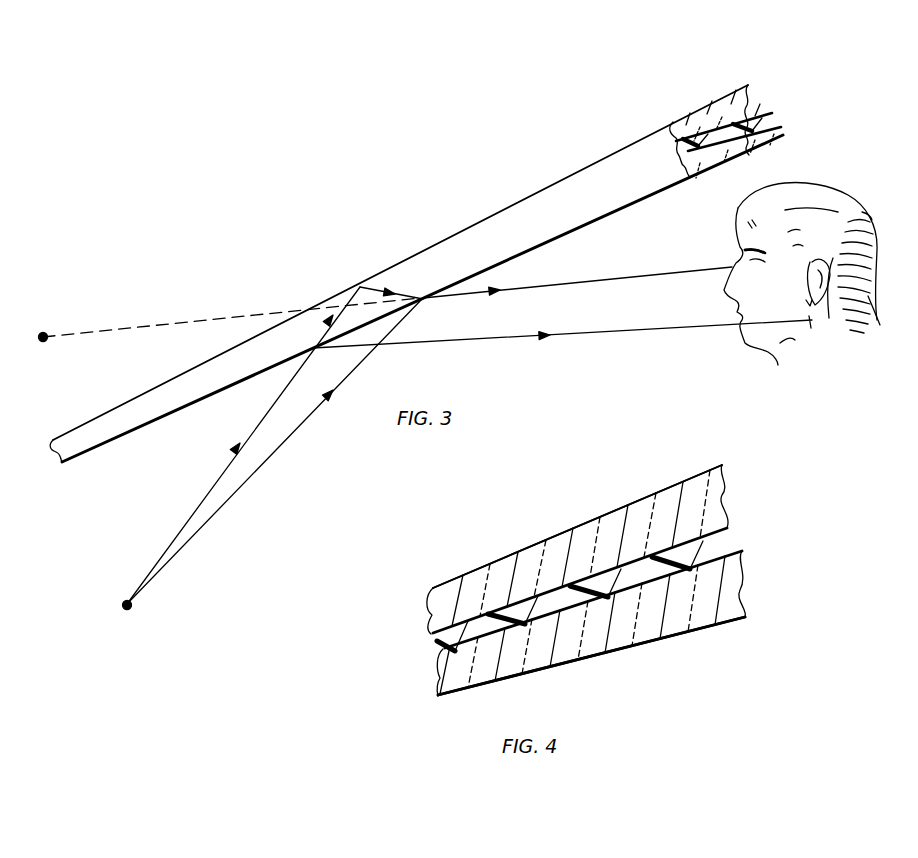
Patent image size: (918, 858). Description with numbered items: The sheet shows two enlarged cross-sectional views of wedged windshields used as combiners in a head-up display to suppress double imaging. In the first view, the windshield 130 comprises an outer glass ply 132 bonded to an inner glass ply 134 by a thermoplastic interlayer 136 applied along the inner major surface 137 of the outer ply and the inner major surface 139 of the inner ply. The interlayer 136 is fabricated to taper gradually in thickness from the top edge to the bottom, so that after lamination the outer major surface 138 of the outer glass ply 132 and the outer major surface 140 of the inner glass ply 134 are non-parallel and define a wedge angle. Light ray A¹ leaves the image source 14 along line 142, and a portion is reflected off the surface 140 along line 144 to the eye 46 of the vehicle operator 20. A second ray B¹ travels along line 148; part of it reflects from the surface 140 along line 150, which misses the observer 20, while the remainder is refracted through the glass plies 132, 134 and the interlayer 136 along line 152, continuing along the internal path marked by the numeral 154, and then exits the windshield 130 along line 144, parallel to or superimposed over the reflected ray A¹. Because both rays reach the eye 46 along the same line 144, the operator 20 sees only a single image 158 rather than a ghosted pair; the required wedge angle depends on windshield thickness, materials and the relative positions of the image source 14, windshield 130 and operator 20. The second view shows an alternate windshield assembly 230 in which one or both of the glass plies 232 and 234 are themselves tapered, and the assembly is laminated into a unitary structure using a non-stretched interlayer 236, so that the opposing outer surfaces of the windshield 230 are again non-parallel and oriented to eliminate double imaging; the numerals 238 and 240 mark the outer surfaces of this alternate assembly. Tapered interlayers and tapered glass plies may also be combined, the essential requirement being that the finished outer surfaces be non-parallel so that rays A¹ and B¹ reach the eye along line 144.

In FIG. 3, the image source 14 is at (129, 608).
In FIG. 3, the vehicle operator 20 is at (789, 274).
In FIG. 3, the eye 46 is at (750, 257).
In FIG. 3, the windshield 130 is at (752, 98).
In FIG. 3, the outer glass ply 132 is at (763, 88).
In FIG. 3, the inner glass ply 134 is at (780, 127).
In FIG. 3, the interlayer 136 is at (767, 103).
In FIG. 3, the inner major surface of outer glass ply 137 is at (716, 126).
In FIG. 3, the outer major surface of outer glass ply 138 is at (718, 130).
In FIG. 3, the inner major surface of inner glass ply 139 is at (672, 188).
In FIG. 3, the outer major surface of inner glass ply 140 is at (773, 143).
In FIG. 3, the line of light ray A¹ 142 is at (243, 487).
In FIG. 3, the line to the eye 144 is at (547, 289).
In FIG. 3, the line of light ray B¹ 148 is at (203, 494).
In FIG. 3, the reflected line of ray B¹ 150 is at (650, 331).
In FIG. 3, the refracted line of ray B¹ 152 is at (300, 313).
In FIG. 3, the reflected ray 154 is at (400, 292).
In FIG. 3, the single image 158 is at (43, 332).
In FIG. 4, the windshield assembly 230 is at (544, 575).
In FIG. 4, the glass ply 232 is at (437, 607).
In FIG. 4, the glass ply 234 is at (452, 672).
In FIG. 4, the non-stretched interlayer 236 is at (453, 638).
In FIG. 4, the upper surface 238 is at (597, 518).
In FIG. 4, the lower surface 240 is at (640, 644).